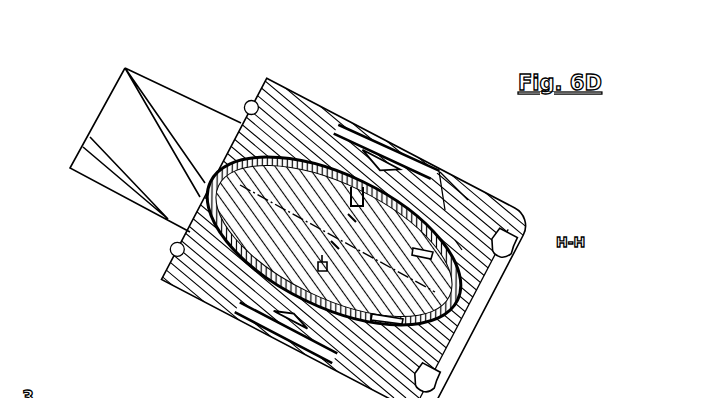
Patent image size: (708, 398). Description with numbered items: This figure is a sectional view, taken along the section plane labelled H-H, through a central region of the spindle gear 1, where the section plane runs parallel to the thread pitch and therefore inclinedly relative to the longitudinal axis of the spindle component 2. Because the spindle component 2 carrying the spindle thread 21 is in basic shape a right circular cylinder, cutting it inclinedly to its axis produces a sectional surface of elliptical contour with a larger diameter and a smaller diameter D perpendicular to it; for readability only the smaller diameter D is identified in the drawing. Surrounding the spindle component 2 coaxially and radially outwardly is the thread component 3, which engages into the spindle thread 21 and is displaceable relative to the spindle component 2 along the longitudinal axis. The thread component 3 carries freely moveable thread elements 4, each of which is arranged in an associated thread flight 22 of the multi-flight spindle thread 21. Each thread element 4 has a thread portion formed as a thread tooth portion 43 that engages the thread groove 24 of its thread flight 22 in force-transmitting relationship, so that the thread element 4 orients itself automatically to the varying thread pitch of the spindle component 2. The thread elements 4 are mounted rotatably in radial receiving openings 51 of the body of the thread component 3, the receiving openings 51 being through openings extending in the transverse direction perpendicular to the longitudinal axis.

The spindle gear 1 is at (82, 76).
The thread component 3 is at (297, 92).
The thread groove 24 is at (334, 207).
The thread flight 22 is at (282, 178).
The thread element 4 is at (348, 126).
The thread tooth portion 43 is at (364, 187).
The spindle component 2 is at (413, 212).
The spindle thread 21 is at (426, 222).
The smaller diameter D is at (323, 262).
The receiving opening 51 is at (430, 374).